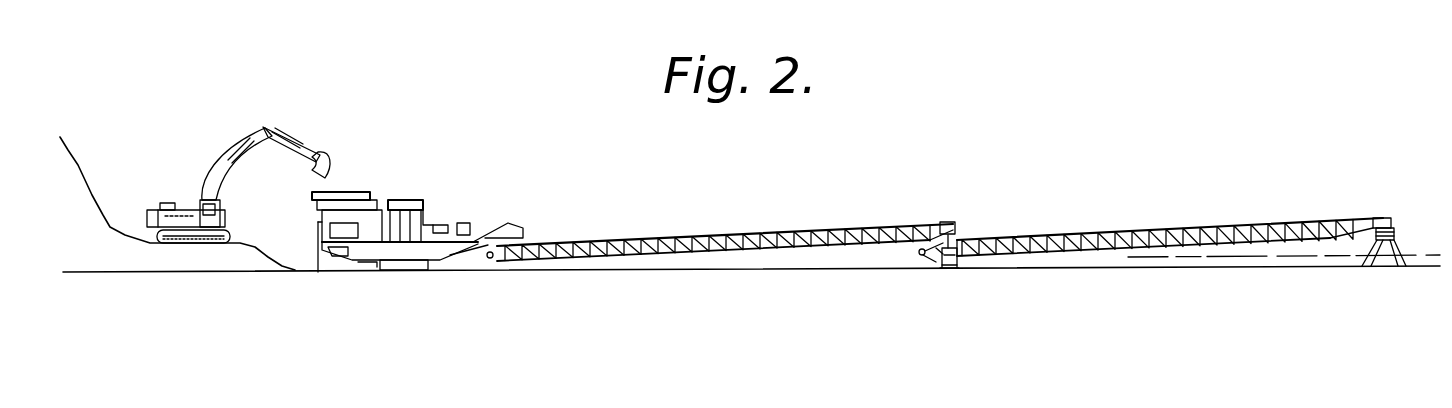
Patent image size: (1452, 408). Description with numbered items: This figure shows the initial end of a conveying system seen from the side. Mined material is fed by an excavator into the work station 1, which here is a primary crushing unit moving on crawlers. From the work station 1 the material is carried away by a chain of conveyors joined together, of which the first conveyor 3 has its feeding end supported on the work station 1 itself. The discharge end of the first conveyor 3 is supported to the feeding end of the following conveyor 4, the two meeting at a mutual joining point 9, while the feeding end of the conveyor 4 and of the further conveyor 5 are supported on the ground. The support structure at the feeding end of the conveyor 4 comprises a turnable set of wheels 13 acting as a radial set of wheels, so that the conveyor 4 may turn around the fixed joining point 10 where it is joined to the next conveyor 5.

The work station 1 is at (412, 200).
The first conveyor 3 is at (735, 237).
The conveyor 4 is at (1163, 229).
The conveyor 5 is at (1394, 233).
The joining point 9 is at (933, 257).
The fixed joining point 10 is at (1367, 218).
The turnable set of wheels 13 is at (954, 259).